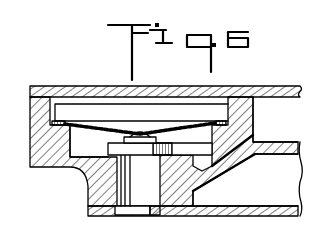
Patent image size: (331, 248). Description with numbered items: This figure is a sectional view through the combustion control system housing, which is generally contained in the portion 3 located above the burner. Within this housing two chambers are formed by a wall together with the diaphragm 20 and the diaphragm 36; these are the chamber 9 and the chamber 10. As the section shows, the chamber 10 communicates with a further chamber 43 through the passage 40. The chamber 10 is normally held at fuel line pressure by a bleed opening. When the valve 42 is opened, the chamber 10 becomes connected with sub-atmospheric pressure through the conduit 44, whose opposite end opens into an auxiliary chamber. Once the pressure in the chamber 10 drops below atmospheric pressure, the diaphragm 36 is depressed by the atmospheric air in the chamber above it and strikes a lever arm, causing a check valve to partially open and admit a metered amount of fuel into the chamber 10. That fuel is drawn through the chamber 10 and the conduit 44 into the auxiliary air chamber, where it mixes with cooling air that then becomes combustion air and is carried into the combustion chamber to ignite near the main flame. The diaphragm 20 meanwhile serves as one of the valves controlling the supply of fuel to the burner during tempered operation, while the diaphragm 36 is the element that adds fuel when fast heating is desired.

The portion 3 is at (82, 191).
The chamber 9 is at (282, 194).
The chamber 10 is at (298, 133).
The diaphragm 20 is at (258, 216).
The diaphragm 36 is at (288, 86).
The passage 40 is at (218, 160).
The valve 42 is at (114, 124).
The chamber 43 is at (86, 143).
The conduit 44 is at (147, 215).